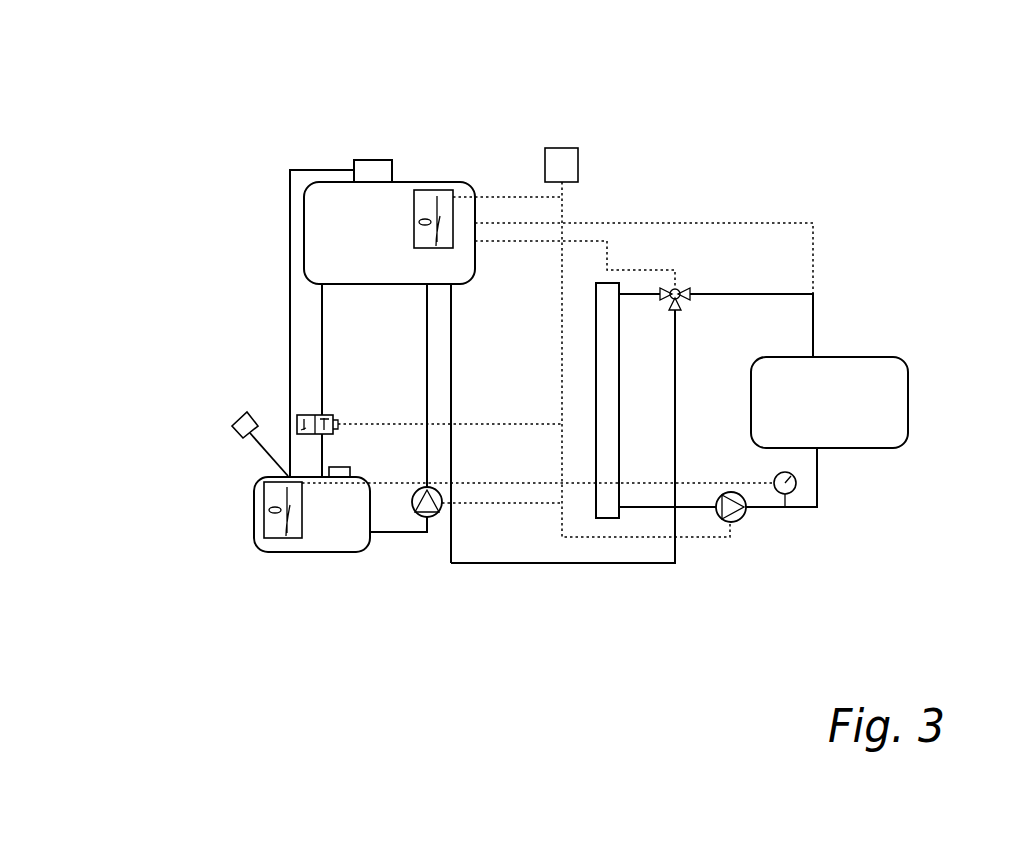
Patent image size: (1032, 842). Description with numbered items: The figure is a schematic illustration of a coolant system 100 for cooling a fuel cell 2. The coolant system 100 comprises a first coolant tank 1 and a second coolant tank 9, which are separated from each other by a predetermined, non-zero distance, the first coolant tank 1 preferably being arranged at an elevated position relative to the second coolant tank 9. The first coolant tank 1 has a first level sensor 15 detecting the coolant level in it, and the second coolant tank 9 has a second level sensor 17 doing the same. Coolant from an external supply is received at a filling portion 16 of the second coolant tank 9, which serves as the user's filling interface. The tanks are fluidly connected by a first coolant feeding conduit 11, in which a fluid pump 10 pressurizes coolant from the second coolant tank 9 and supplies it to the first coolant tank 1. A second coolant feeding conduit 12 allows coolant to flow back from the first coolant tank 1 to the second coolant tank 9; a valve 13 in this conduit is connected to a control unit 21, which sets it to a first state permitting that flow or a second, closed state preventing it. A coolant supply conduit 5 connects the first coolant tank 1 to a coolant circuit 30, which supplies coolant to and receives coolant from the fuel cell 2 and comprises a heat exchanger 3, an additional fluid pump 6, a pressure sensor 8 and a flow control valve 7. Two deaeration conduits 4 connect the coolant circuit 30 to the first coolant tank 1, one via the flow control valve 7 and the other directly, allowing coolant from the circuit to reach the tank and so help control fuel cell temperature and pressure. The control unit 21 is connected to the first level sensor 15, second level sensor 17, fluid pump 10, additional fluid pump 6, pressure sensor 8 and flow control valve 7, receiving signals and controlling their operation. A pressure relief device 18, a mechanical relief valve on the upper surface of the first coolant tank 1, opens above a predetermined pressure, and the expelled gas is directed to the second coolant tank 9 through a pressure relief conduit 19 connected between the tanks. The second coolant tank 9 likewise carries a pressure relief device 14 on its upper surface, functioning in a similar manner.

The coolant system 100 is at (280, 133).
The first coolant tank 1 is at (412, 177).
The fuel cell 2 is at (908, 400).
The heat exchanger 3 is at (605, 518).
The deaeration conduits 4 is at (540, 240).
The coolant supply conduit 5 is at (510, 563).
The additional fluid pump 6 is at (740, 522).
The flow control valve 7 is at (687, 287).
The pressure sensor 8 is at (797, 478).
The second coolant tank 9 is at (325, 552).
The fluid pump 10 is at (427, 517).
The first coolant feeding conduit 11 is at (425, 392).
The second coolant feeding conduit 12 is at (323, 325).
The valve 13 is at (328, 413).
The pressure relief device 14 is at (352, 465).
The first level sensor 15 is at (443, 190).
The filling portion 16 is at (238, 417).
The second level sensor 17 is at (273, 542).
The pressure relief device 18 is at (376, 160).
The pressure relief conduit 19 is at (290, 213).
The control unit 21 is at (562, 148).
The coolant circuit 30 is at (813, 327).